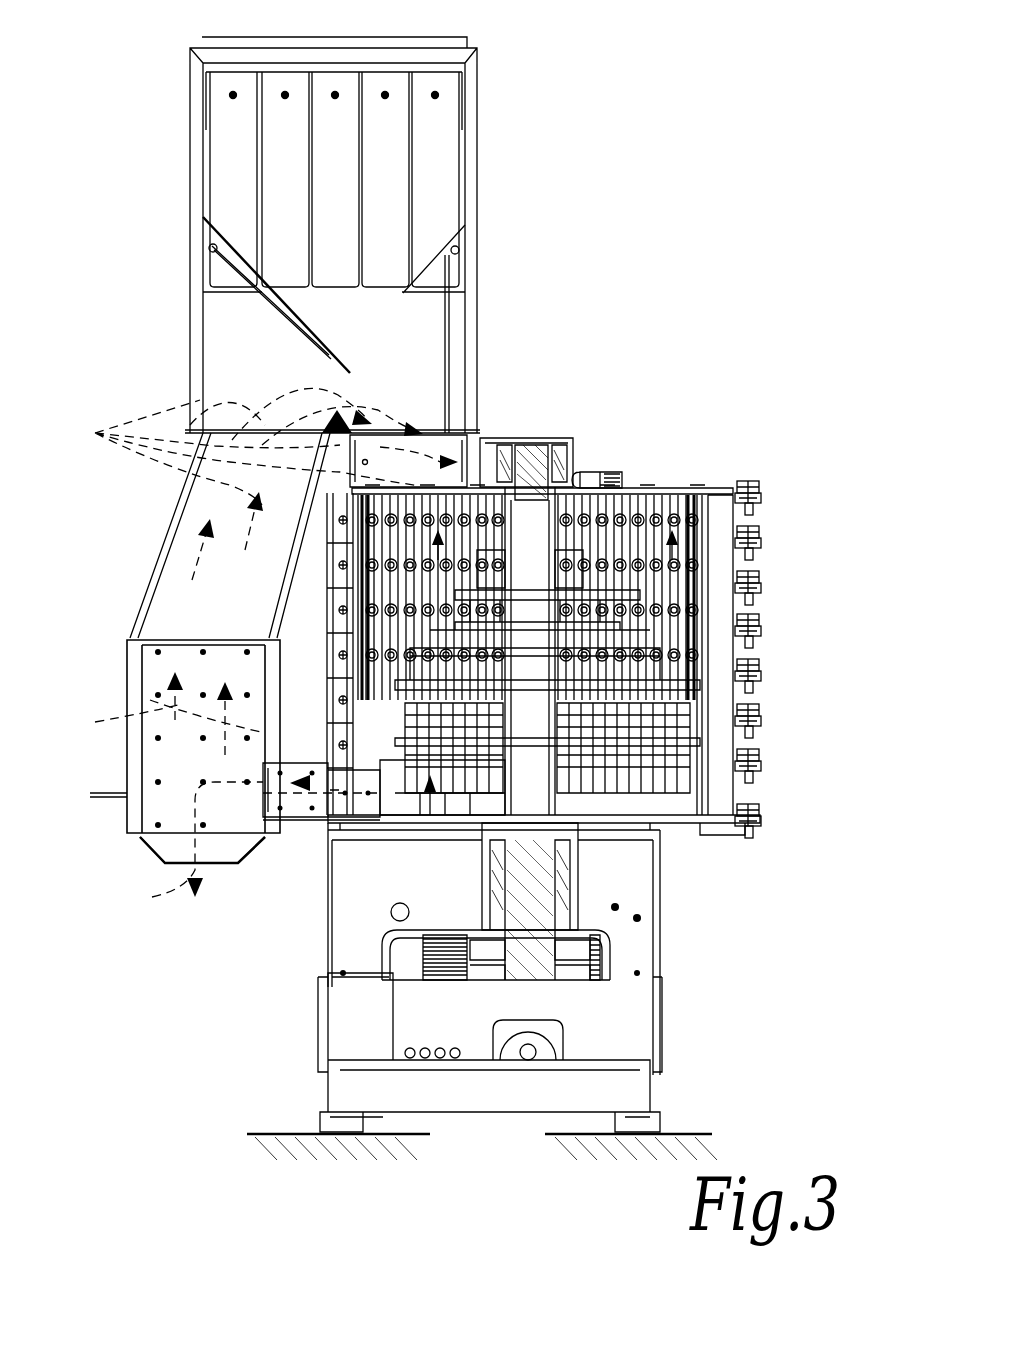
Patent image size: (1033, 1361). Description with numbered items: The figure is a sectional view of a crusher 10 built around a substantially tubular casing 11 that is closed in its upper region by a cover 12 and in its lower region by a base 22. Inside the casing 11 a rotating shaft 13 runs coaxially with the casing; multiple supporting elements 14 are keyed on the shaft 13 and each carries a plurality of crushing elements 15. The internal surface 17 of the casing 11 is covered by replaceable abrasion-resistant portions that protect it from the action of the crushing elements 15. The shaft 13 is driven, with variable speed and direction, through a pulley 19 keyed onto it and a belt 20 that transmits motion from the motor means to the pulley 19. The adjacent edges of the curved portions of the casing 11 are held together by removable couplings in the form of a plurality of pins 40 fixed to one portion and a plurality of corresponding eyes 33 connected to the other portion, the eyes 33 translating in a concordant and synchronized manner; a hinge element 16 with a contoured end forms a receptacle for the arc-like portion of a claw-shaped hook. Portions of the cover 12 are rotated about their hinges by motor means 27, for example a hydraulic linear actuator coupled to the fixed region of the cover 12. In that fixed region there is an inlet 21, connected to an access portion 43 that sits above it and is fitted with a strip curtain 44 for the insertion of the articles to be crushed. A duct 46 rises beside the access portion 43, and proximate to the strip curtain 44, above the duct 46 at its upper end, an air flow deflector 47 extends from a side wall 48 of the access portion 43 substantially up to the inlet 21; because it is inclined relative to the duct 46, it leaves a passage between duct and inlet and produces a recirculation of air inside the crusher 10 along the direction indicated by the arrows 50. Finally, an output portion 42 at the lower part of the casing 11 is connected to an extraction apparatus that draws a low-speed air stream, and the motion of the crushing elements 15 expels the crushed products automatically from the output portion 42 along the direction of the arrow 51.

The crusher 10 is at (690, 198).
The casing 11 is at (742, 795).
The cover 12 is at (692, 484).
The rotating shaft 13 is at (535, 462).
The supporting elements 14 is at (620, 842).
The crushing elements 15 is at (432, 775).
The hinge element 16 is at (700, 722).
The internal surface 17 is at (680, 620).
The pulley 19 is at (578, 960).
The belt 20 is at (448, 962).
The inlet 21 is at (440, 432).
The base 22 is at (692, 825).
The motor means 27 is at (582, 475).
The eyes 33 is at (762, 628).
The pins 40 is at (762, 533).
The output portion 42 is at (270, 800).
The access portion 43 is at (365, 180).
The strip curtain 44 is at (333, 140).
The duct 46 is at (160, 612).
The air flow deflector 47 is at (290, 323).
The side wall 48 is at (195, 243).
The arrows 50 is at (229, 571).
The arrow 51 is at (188, 848).